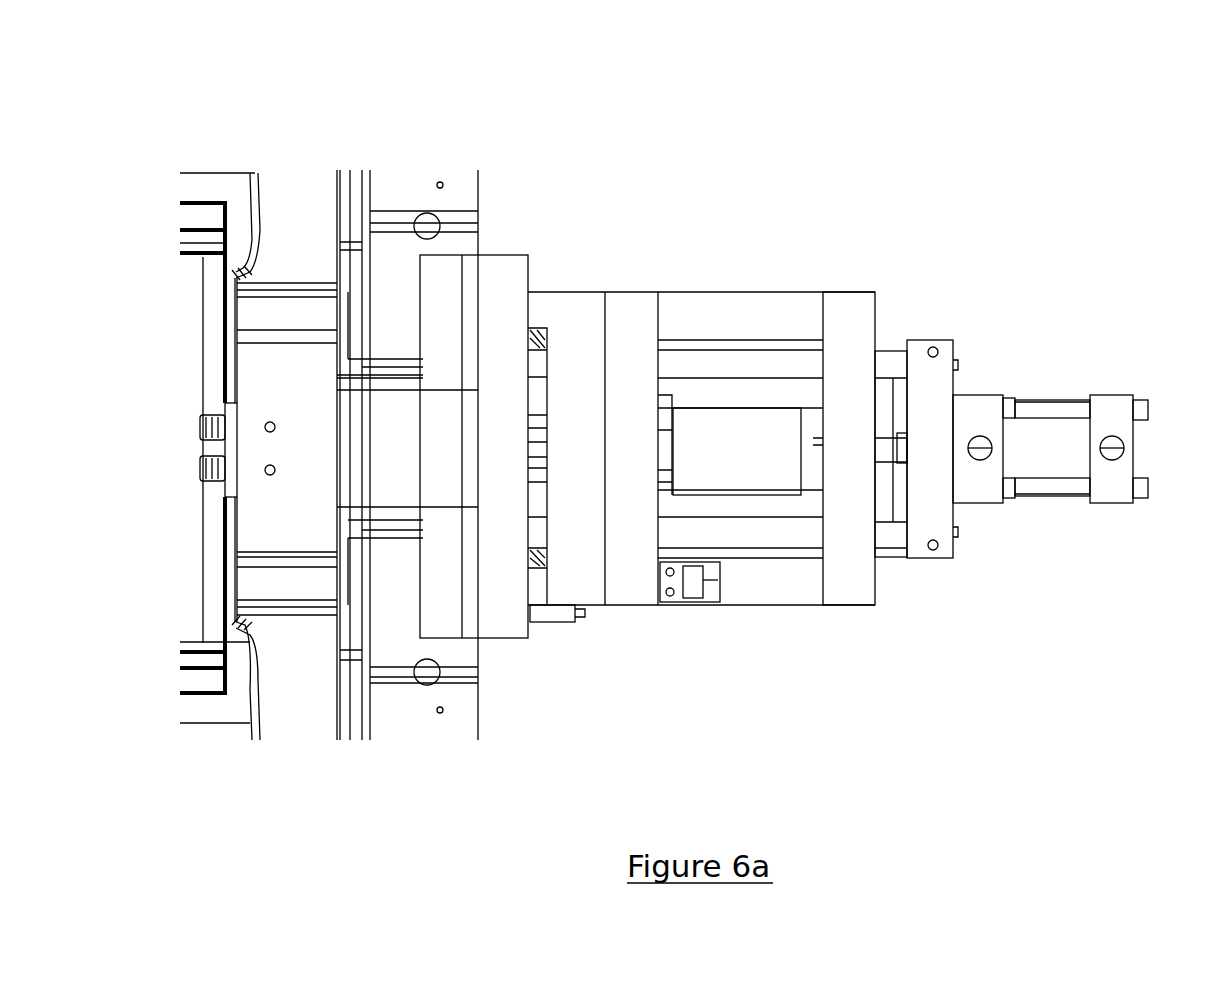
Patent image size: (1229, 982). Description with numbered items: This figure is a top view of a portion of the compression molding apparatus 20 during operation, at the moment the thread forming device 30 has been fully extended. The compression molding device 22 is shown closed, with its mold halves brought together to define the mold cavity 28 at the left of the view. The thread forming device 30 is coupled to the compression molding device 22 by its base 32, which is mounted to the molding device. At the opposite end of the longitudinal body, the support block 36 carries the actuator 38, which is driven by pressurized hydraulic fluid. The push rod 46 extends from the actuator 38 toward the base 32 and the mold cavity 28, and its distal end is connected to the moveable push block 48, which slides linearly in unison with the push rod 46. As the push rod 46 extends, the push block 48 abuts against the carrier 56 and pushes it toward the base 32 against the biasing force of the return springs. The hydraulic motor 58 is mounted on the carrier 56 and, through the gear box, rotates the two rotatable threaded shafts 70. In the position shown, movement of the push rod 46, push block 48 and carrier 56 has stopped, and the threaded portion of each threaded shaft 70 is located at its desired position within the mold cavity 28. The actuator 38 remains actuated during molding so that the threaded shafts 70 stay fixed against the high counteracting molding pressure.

The compression molding apparatus 20 is at (1106, 83).
The compression molding device 22 is at (492, 178).
The mold cavity 28 is at (170, 364).
The thread forming device 30 is at (985, 703).
The base 32 is at (507, 633).
The support block 36 is at (945, 540).
The actuator 38 is at (1060, 463).
The push rod 46 is at (883, 460).
The push block 48 is at (845, 595).
The carrier 56 is at (628, 598).
The hydraulic motor 58 is at (762, 420).
The rotatable threaded shaft 70 is at (200, 430).